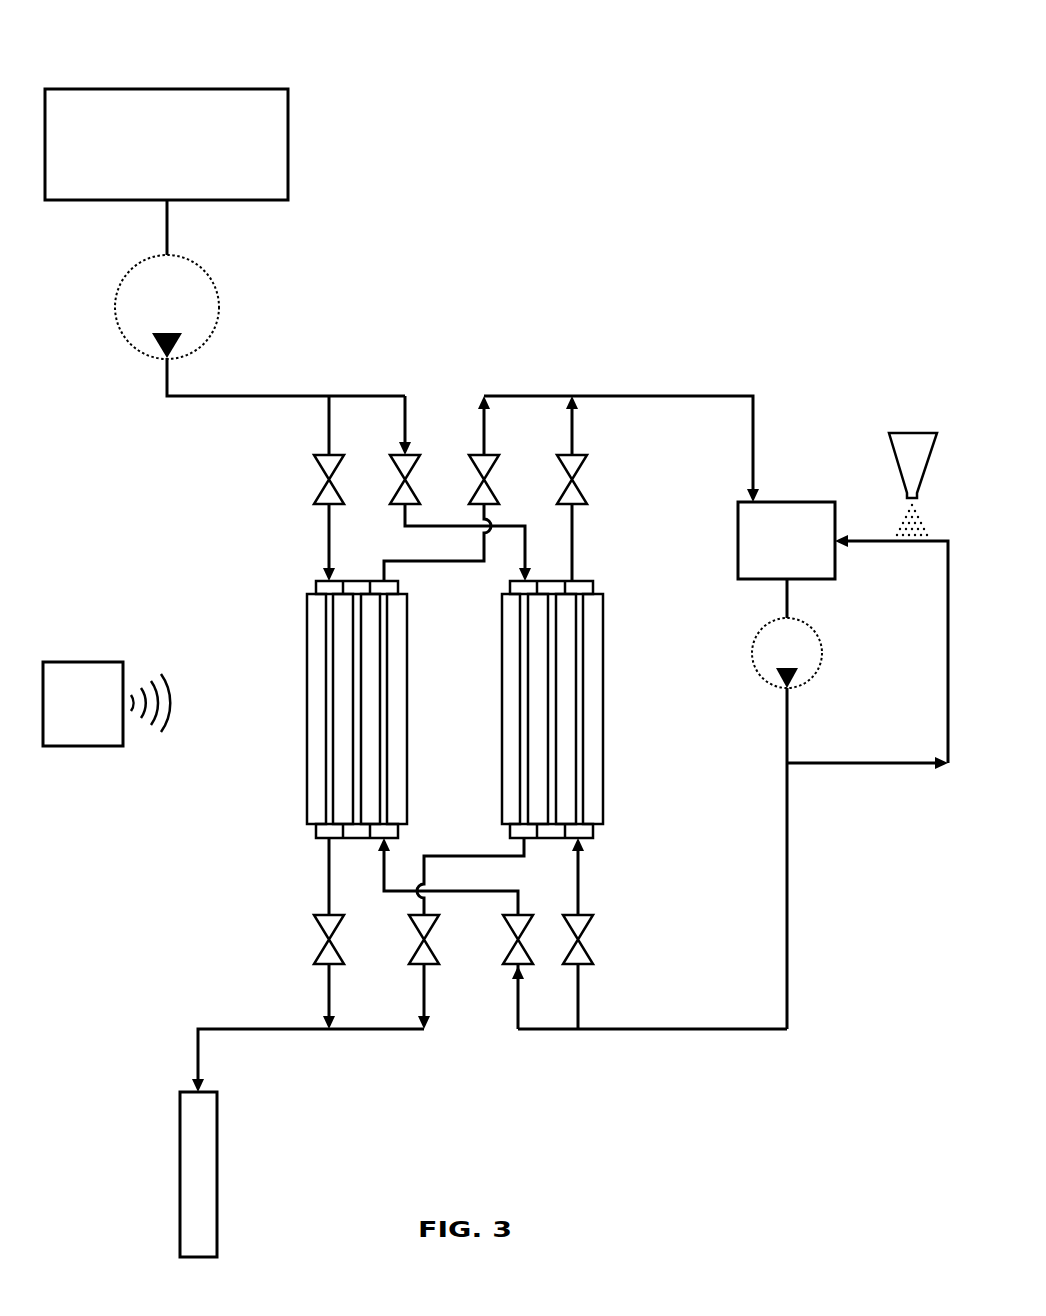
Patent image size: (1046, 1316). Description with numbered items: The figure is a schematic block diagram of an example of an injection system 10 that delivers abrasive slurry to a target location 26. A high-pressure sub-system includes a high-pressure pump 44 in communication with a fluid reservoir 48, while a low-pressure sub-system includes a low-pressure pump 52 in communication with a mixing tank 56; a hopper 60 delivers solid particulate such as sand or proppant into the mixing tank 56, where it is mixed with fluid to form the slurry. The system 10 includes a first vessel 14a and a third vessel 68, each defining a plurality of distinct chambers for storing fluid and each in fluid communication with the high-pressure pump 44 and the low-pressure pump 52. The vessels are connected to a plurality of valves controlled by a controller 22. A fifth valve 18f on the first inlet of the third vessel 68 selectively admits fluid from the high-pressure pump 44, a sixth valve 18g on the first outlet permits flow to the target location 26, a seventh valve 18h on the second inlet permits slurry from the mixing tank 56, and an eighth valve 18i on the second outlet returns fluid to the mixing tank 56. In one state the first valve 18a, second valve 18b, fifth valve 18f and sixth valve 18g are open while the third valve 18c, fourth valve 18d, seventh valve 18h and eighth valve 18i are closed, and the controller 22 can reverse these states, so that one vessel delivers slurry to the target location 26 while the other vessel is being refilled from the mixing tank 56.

The system 10 is at (96, 26).
The fluid reservoir 48 is at (181, 157).
The high-pressure pump 44 is at (124, 292).
The third valve 18c is at (316, 466).
The fifth valve 18f is at (412, 462).
The second valve 18b is at (478, 460).
The eighth valve 18i is at (588, 470).
The fourth valve 18d is at (316, 926).
The sixth valve 18g is at (430, 965).
The first valve 18a is at (512, 972).
The seventh valve 18h is at (588, 930).
The first vessel 14a is at (298, 600).
The third vessel 68 is at (616, 802).
The controller 22 is at (97, 714).
The target location 26 is at (183, 1155).
The mixing tank 56 is at (800, 556).
The low-pressure pump 52 is at (764, 650).
The hopper 60 is at (930, 434).